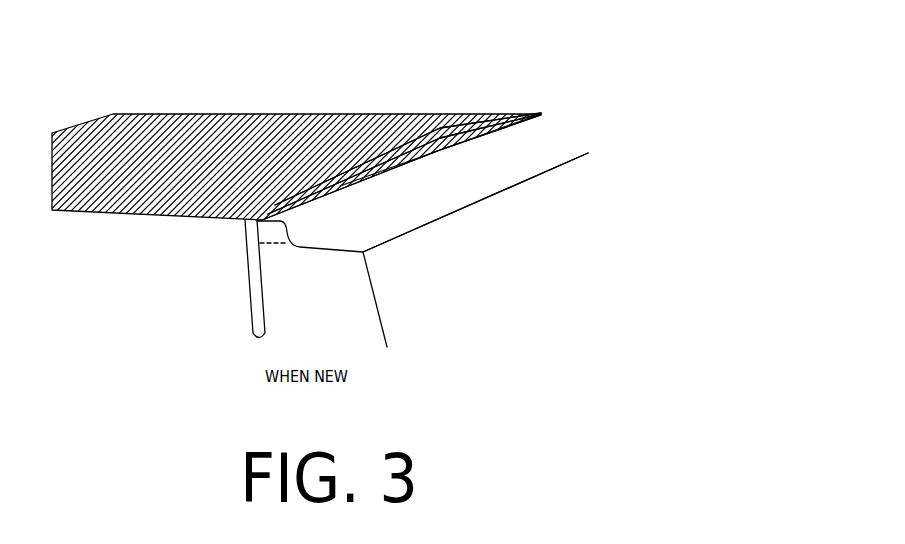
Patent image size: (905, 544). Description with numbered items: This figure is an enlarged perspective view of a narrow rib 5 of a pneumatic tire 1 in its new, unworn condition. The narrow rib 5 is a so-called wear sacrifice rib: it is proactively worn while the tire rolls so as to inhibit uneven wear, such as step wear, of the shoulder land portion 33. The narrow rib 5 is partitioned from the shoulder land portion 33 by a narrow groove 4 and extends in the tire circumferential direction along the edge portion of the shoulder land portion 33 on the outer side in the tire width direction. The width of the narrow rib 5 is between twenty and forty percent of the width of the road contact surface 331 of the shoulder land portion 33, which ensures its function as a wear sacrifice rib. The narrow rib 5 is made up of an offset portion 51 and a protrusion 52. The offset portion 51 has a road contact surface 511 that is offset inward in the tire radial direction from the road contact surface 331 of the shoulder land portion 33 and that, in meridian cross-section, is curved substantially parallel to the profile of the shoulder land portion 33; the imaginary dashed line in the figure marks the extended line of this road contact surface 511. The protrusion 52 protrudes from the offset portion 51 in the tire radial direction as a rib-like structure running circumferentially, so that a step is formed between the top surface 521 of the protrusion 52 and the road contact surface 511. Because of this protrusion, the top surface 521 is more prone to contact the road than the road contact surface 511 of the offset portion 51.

The cleaning device 1 is at (470, 58).
The shoulder land portion 33 is at (256, 114).
The road contact surface of the shoulder land portion 331 is at (318, 127).
The narrow groove 4 is at (462, 116).
The narrow rib 5 is at (556, 120).
The offset portion 51 is at (533, 170).
The road contact surface of the offset portion 511 is at (468, 193).
The protrusion 52 is at (502, 116).
The top surface of the protrusion 521 is at (397, 172).